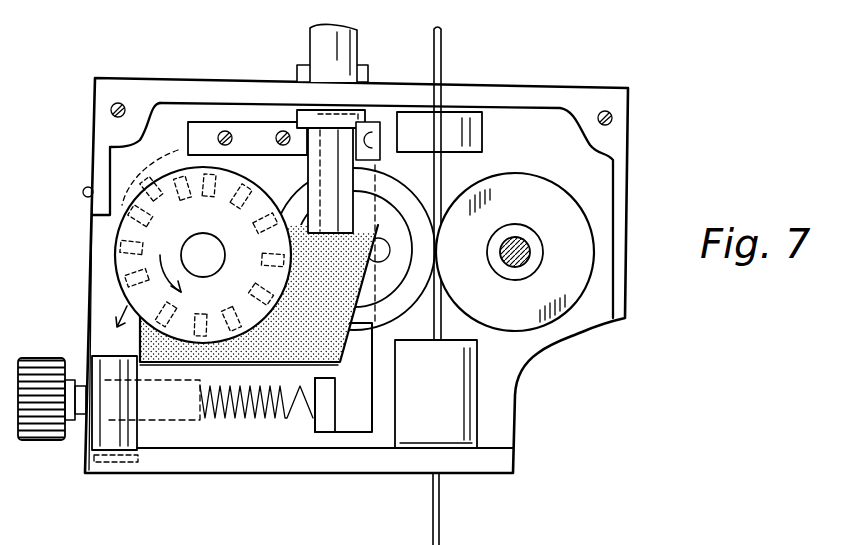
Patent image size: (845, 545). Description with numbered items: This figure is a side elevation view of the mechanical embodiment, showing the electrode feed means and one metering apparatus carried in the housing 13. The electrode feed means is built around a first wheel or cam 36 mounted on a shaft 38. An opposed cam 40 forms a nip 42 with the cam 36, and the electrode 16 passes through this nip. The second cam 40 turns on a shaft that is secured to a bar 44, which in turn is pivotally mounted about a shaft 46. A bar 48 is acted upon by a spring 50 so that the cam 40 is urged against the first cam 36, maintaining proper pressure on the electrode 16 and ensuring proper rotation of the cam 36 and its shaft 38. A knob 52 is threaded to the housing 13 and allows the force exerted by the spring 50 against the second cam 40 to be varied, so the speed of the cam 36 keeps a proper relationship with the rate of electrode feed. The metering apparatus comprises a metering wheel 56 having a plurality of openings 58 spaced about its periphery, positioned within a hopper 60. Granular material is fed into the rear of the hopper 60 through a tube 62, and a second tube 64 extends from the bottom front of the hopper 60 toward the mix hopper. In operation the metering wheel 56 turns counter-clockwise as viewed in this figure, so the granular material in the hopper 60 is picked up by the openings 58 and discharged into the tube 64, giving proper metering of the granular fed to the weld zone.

The housing 13 is at (550, 93).
The electrode 16 is at (445, 45).
The first wheel or cam 36 is at (527, 198).
The shaft 38 is at (529, 250).
The opposed cam 40 is at (404, 192).
The nip 42 is at (447, 196).
The bar 44 is at (358, 420).
The shaft 46 is at (362, 143).
The bar 48 is at (326, 420).
The spring 50 is at (304, 422).
The knob 52 is at (34, 357).
The metering wheel 56 is at (216, 222).
The openings 58 is at (178, 152).
The hopper 60 is at (343, 348).
The tube 62 is at (310, 36).
The second tube 64 is at (108, 438).